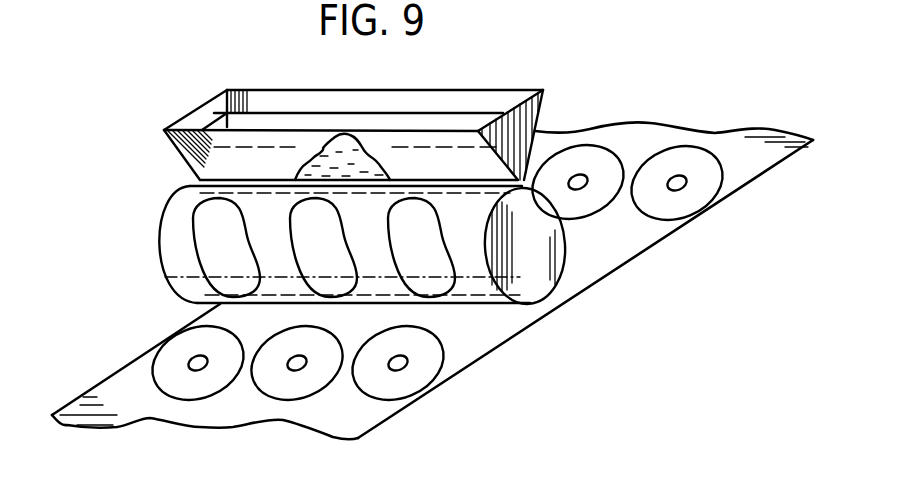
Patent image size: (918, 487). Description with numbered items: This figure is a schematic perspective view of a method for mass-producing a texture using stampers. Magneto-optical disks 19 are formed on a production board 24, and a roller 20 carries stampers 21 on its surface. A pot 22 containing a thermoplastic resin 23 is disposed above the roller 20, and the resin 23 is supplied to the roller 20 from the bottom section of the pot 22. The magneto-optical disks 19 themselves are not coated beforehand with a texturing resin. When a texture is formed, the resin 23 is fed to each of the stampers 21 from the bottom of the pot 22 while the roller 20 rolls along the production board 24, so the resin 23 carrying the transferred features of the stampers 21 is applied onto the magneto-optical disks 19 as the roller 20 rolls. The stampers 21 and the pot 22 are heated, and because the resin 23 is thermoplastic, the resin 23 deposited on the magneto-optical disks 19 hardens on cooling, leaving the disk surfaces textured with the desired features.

The magneto-optical disks 19 is at (602, 157).
The roller 20 is at (537, 252).
The stampers 21 is at (210, 238).
The pot 22 is at (547, 97).
The thermoplastic resin 23 is at (400, 120).
The production board 24 is at (725, 142).